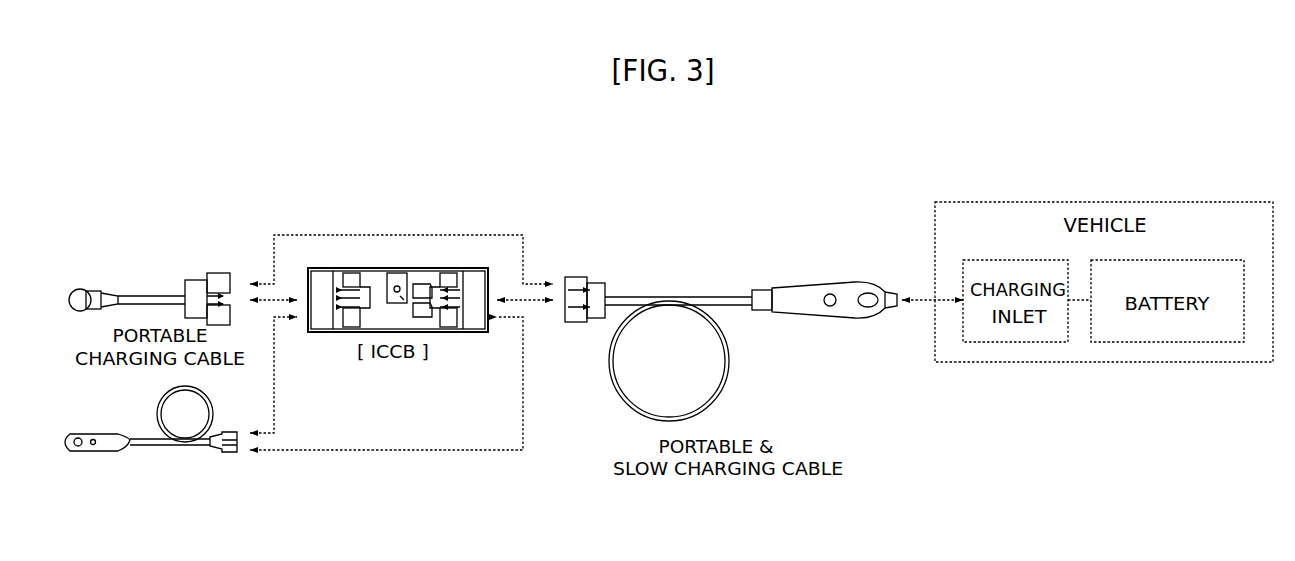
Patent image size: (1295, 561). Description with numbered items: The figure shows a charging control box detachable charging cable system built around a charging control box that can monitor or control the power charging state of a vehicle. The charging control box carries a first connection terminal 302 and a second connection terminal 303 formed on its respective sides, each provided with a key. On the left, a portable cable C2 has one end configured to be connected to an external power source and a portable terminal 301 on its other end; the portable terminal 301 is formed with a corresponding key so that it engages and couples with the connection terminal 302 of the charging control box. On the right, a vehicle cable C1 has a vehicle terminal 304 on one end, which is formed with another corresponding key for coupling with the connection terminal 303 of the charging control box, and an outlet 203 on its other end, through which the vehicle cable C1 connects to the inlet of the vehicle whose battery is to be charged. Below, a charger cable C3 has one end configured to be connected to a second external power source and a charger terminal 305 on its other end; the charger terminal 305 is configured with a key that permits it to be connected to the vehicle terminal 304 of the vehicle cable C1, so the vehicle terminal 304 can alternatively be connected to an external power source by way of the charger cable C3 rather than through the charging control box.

The portable cable C2 is at (120, 293).
The portable terminal 301 is at (213, 275).
The first connection terminal 302 is at (323, 330).
The second connection terminal 303 is at (472, 330).
The vehicle terminal 304 is at (580, 278).
The vehicle cable C1 is at (712, 297).
The outlet 203 is at (857, 281).
The charger cable C3 is at (148, 447).
The charger terminal 305 is at (222, 453).